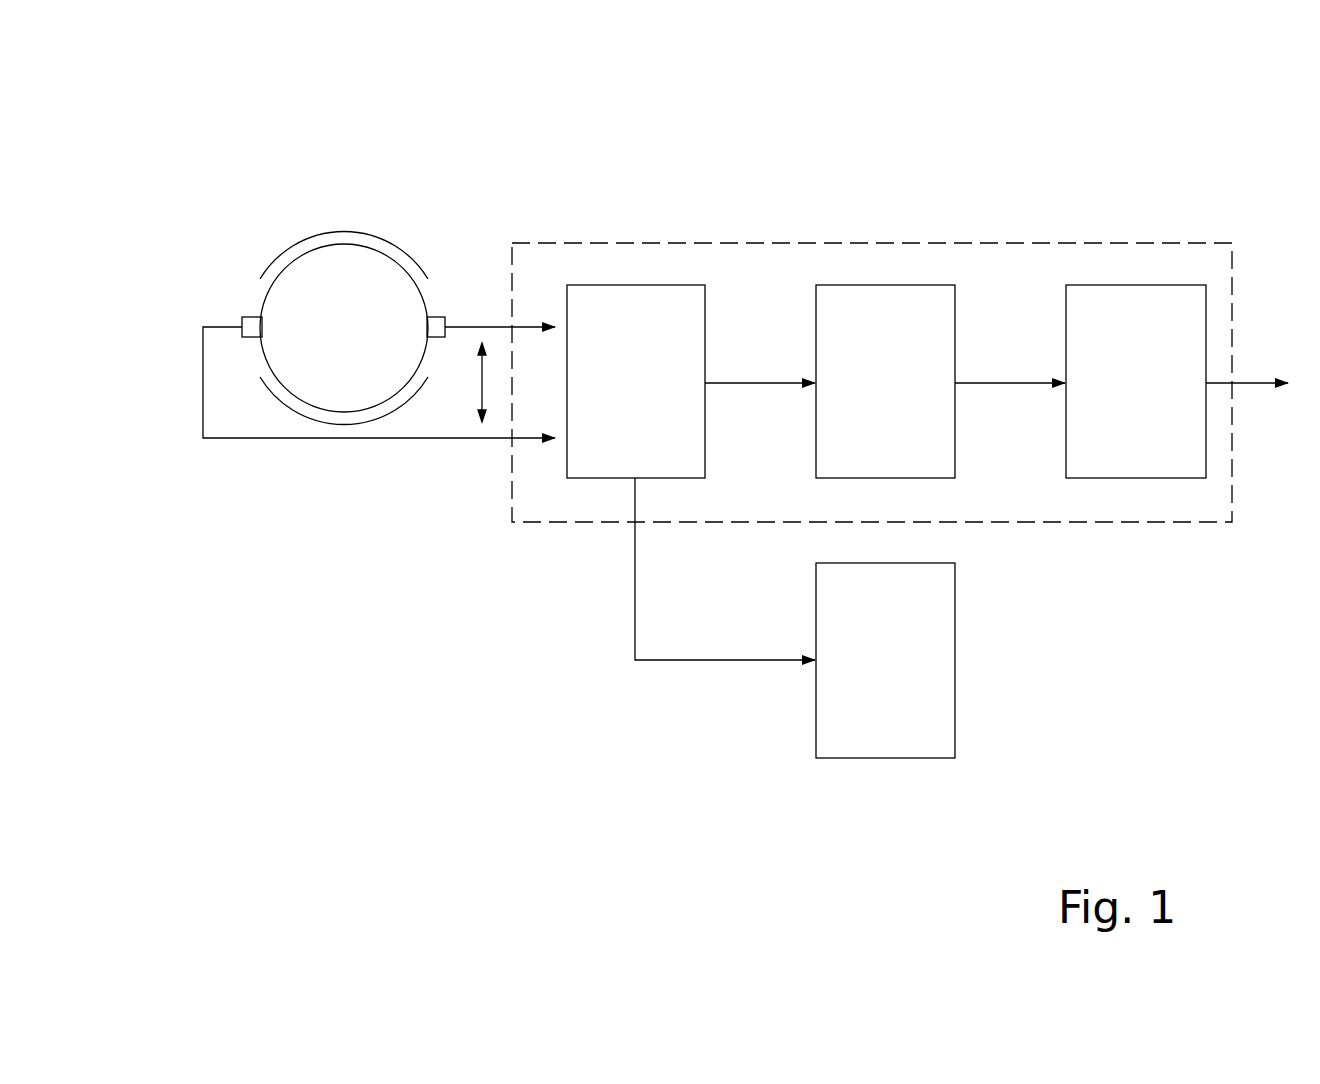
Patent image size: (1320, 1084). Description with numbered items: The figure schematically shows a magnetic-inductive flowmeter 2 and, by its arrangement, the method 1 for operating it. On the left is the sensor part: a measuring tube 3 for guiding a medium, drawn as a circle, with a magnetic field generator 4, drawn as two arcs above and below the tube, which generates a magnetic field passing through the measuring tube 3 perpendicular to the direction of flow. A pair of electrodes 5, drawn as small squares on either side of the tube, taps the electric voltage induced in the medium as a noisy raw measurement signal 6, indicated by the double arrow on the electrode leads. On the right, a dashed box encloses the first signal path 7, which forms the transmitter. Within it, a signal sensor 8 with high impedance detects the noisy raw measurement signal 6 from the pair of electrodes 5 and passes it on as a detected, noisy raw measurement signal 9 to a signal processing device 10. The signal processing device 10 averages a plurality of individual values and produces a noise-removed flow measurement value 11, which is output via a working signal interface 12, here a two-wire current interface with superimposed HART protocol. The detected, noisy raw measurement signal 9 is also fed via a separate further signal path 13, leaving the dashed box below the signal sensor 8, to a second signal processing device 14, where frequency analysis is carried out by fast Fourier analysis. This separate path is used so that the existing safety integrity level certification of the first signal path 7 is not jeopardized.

The method 1 is at (955, 150).
The magnetic-inductive flowmeter 2 is at (955, 150).
The measuring tube 3 is at (263, 298).
The magnetic field generator 4 is at (328, 228).
The pair of electrodes 5 is at (440, 317).
The noisy raw measurement signal 6 is at (470, 395).
The signal path 7 is at (872, 382).
The signal sensor 8 is at (600, 314).
The detected noisy raw measurement signal 9 is at (750, 383).
The signal processing device 10 is at (860, 314).
The noise-removed flow measurement value 11 is at (1013, 383).
The working signal interface 12 is at (1110, 314).
The further signal path 13 is at (673, 660).
The second signal processing device 14 is at (860, 592).